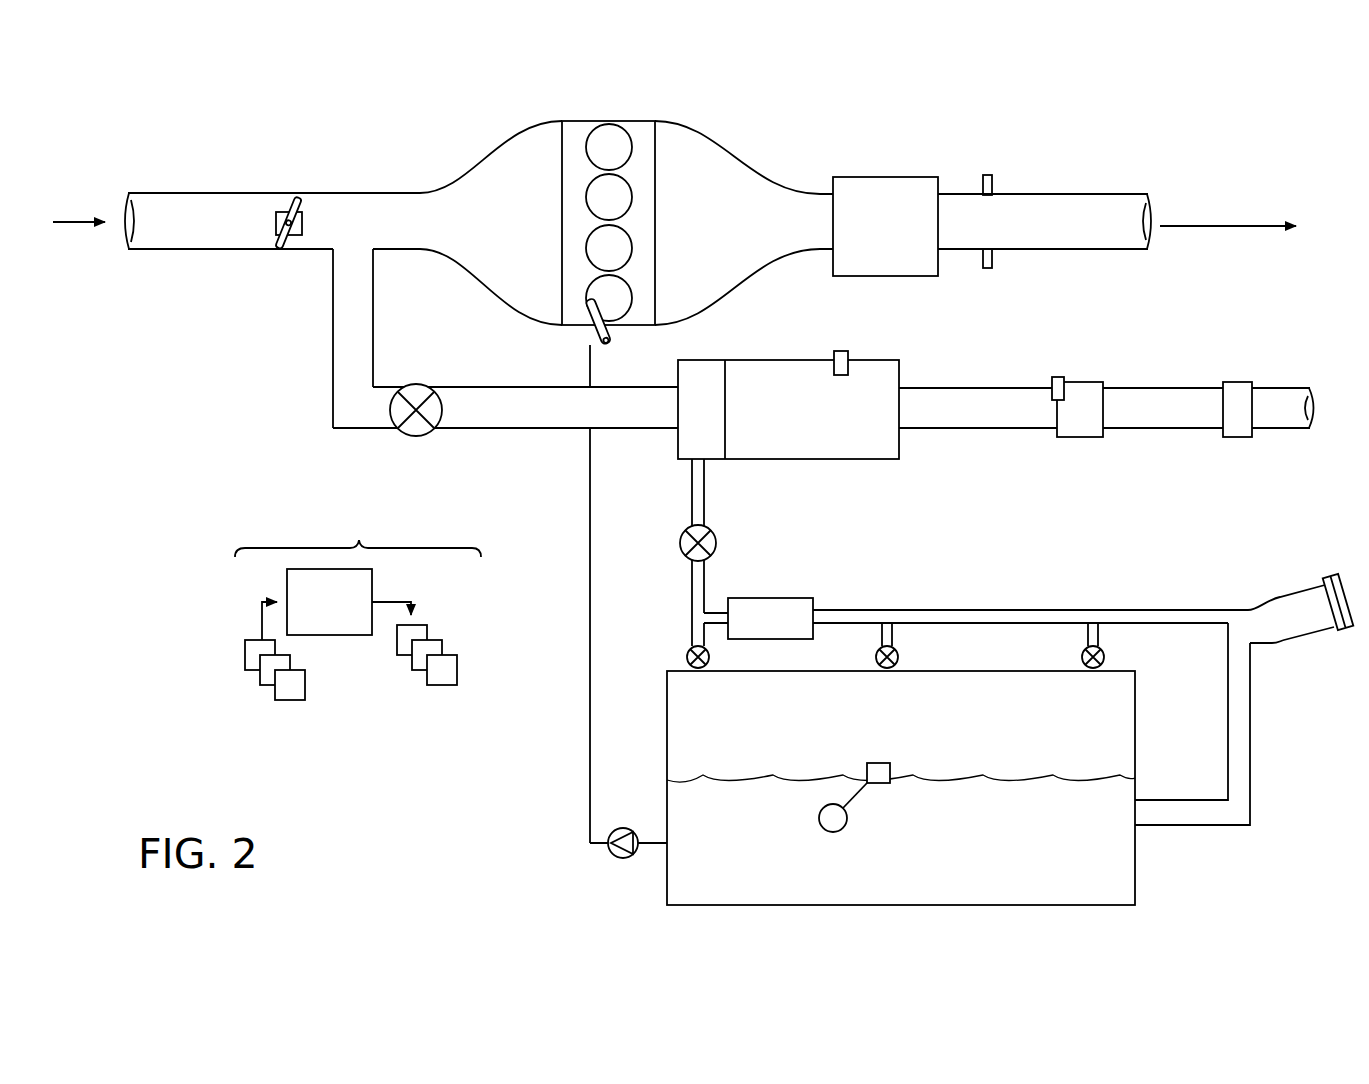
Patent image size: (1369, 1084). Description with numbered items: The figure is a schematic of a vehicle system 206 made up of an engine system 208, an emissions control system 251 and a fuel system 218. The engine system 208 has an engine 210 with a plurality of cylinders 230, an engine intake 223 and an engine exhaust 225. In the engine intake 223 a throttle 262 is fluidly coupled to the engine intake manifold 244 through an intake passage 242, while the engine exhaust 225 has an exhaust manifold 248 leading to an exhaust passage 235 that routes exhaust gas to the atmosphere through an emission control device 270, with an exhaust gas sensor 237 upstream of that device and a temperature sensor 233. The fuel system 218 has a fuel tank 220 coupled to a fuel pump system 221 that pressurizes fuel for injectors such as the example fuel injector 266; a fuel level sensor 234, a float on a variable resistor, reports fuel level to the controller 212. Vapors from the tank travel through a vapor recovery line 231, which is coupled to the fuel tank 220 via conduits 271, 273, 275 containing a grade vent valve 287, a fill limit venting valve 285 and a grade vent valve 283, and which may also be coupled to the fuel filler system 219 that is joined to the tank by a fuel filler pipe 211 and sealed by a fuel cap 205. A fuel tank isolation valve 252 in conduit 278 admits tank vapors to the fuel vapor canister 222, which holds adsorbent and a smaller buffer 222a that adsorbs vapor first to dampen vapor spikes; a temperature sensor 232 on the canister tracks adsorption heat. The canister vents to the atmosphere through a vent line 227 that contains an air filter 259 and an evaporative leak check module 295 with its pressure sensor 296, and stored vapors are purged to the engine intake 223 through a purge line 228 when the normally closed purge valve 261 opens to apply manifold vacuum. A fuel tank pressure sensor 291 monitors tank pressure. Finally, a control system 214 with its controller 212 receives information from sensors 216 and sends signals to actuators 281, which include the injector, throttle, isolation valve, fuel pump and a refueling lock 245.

The vehicle system 206 is at (146, 124).
The engine intake 223 is at (492, 144).
The cylinders 230 is at (632, 139).
The engine 210 is at (656, 205).
The engine intake manifold 244 is at (500, 212).
The exhaust manifold 248 is at (724, 212).
The engine exhaust 225 is at (827, 131).
The engine system 208 is at (952, 119).
The emission control device 270 is at (874, 177).
The exhaust gas sensor 237 is at (983, 187).
The temperature sensor 233 is at (983, 257).
The exhaust passage 235 is at (1104, 194).
The throttle 262 is at (301, 222).
The intake passage 242 is at (325, 249).
The purge valve 261 is at (411, 384).
The purge line 228 is at (505, 403).
The fuel injector 266 is at (596, 328).
The buffer 222a is at (698, 360).
The temperature sensor 232 is at (840, 351).
The fuel vapor canister 222 is at (899, 379).
The vent line 227 is at (975, 404).
The pressure sensor 296 is at (1053, 378).
The evaporative leak check module 295 is at (1083, 382).
The air filter 259 is at (1246, 382).
The emissions control system 251 is at (1298, 337).
The conduit 278 is at (692, 495).
The fuel tank isolation valve 252 is at (690, 555).
The fuel tank pressure sensor 291 is at (813, 604).
The grade vent valve 287 is at (686, 657).
The conduit 271 is at (703, 630).
The conduit 273 is at (881, 630).
The fill limit venting valve 285 is at (898, 656).
The conduit 275 is at (1087, 630).
The grade vent valve 283 is at (1104, 656).
The vapor recovery line 231 is at (1153, 608).
The fuel cap 205 is at (1331, 577).
The fuel filler system 219 is at (1302, 569).
The fuel filler pipe 211 is at (1252, 718).
The refueling lock 245 is at (1331, 634).
The fuel tank 220 is at (1135, 771).
The fuel level sensor 234 is at (875, 763).
The fuel pump system 221 is at (623, 828).
The fuel system 218 is at (1183, 863).
The control system 214 is at (358, 631).
The controller 212 is at (329, 602).
The sensors 216 is at (235, 704).
The actuators 281 is at (387, 686).